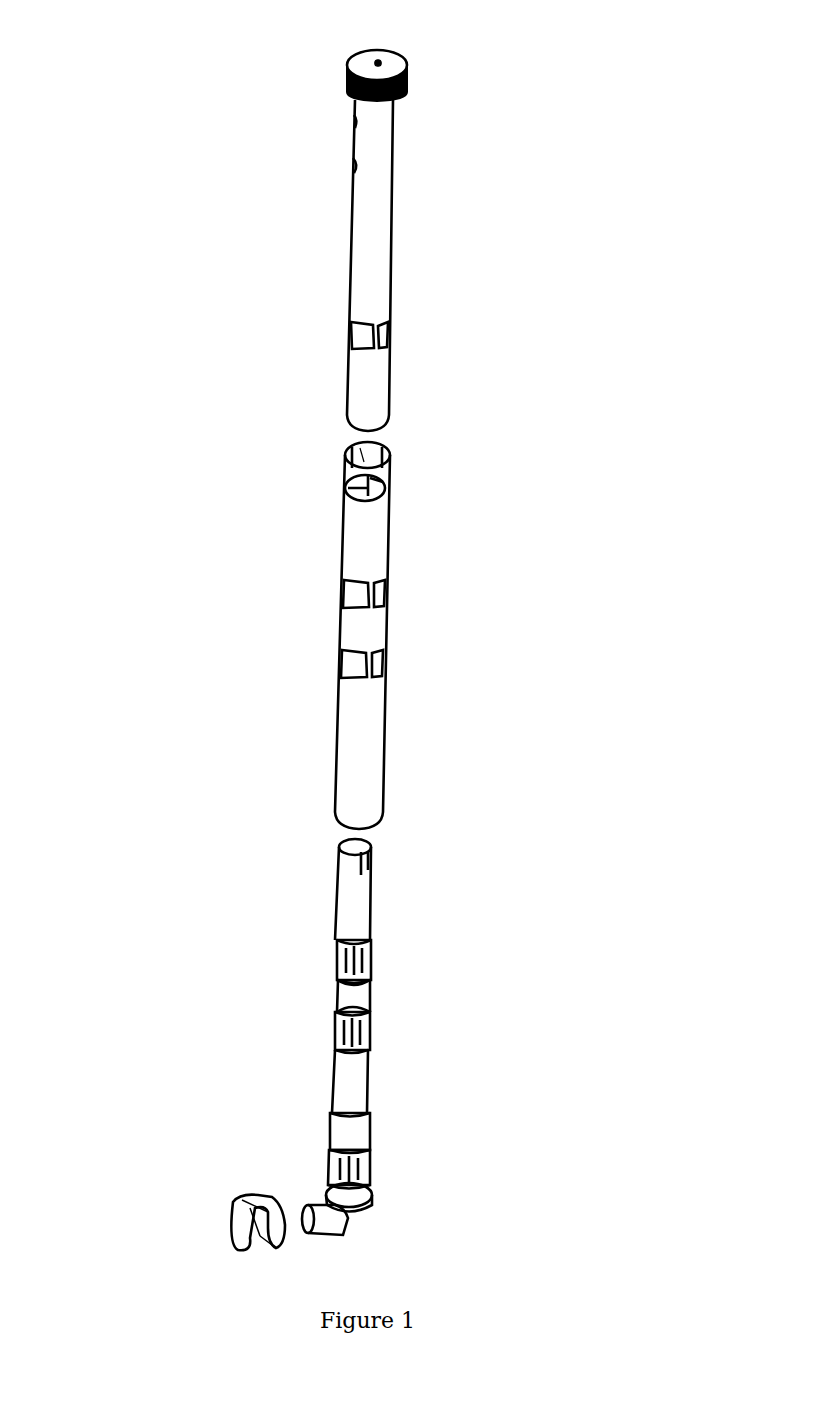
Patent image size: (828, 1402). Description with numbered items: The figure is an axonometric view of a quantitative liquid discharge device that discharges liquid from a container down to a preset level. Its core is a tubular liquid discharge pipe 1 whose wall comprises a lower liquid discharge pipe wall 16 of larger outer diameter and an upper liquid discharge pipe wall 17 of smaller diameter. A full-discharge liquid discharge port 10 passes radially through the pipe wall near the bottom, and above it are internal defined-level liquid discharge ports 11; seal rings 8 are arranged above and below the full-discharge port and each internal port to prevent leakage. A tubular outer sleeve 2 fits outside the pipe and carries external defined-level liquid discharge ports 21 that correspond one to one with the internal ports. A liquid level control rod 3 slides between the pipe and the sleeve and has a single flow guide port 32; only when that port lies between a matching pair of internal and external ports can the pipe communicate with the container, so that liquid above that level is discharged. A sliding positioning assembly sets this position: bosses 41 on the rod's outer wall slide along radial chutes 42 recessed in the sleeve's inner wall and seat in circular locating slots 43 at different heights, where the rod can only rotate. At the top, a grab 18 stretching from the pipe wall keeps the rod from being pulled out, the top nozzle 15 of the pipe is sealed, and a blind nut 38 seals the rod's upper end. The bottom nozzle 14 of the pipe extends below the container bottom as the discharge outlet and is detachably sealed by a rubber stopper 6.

The liquid discharge pipe 1 is at (181, 863).
The outer sleeve 2 is at (530, 587).
The liquid level control rod 3 is at (418, 265).
The rubber stopper 6 is at (220, 1218).
The seal rings 8 is at (338, 940).
The full-discharge liquid discharge port 10 is at (382, 1168).
The internal defined-level liquid discharge port 11 is at (333, 957).
The bottom nozzle 14 is at (300, 1223).
The top nozzle 15 is at (345, 845).
The lower liquid discharge pipe wall 16 is at (330, 1131).
The upper liquid discharge pipe wall 17 is at (370, 995).
The grab 18 is at (372, 872).
The external defined-level liquid discharge port 21 is at (388, 590).
The flow guide port 32 is at (352, 338).
The blind nut 38 is at (384, 60).
The boss 41 is at (352, 162).
The radial chute 42 is at (362, 445).
The locating slot 43 is at (362, 505).